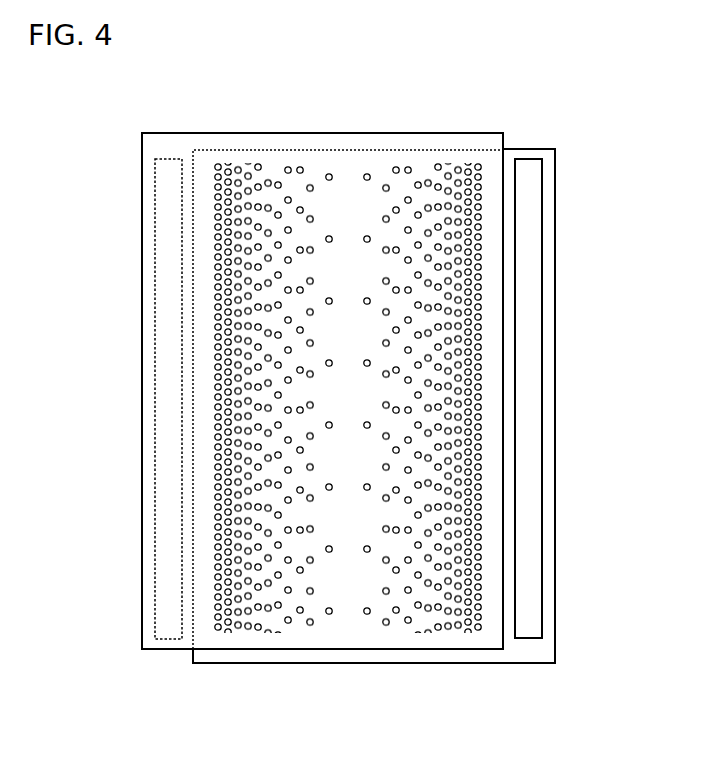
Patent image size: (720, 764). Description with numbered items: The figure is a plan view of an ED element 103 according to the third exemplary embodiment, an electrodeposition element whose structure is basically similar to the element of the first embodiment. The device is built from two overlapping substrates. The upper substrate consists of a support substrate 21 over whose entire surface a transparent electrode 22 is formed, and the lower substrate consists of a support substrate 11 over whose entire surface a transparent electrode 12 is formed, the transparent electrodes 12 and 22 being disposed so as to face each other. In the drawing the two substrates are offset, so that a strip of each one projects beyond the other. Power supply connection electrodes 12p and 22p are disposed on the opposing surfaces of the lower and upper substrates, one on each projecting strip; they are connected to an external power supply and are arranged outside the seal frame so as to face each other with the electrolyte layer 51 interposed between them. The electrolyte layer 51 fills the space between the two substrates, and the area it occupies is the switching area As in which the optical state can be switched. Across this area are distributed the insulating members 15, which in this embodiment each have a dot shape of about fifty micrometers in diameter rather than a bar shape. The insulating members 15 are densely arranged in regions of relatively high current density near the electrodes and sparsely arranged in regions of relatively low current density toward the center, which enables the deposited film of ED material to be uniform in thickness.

The ED element 103 is at (622, 711).
The support substrate 21 is at (255, 391).
The transparent electrode 22 is at (322, 391).
The power supply connection electrode 22p is at (107, 399).
The support substrate 11 is at (442, 406).
The transparent electrode 12 is at (374, 406).
The power supply connection electrode 12p is at (589, 398).
The insulating member 15 is at (348, 368).
The electrolyte layer 51 is at (412, 366).